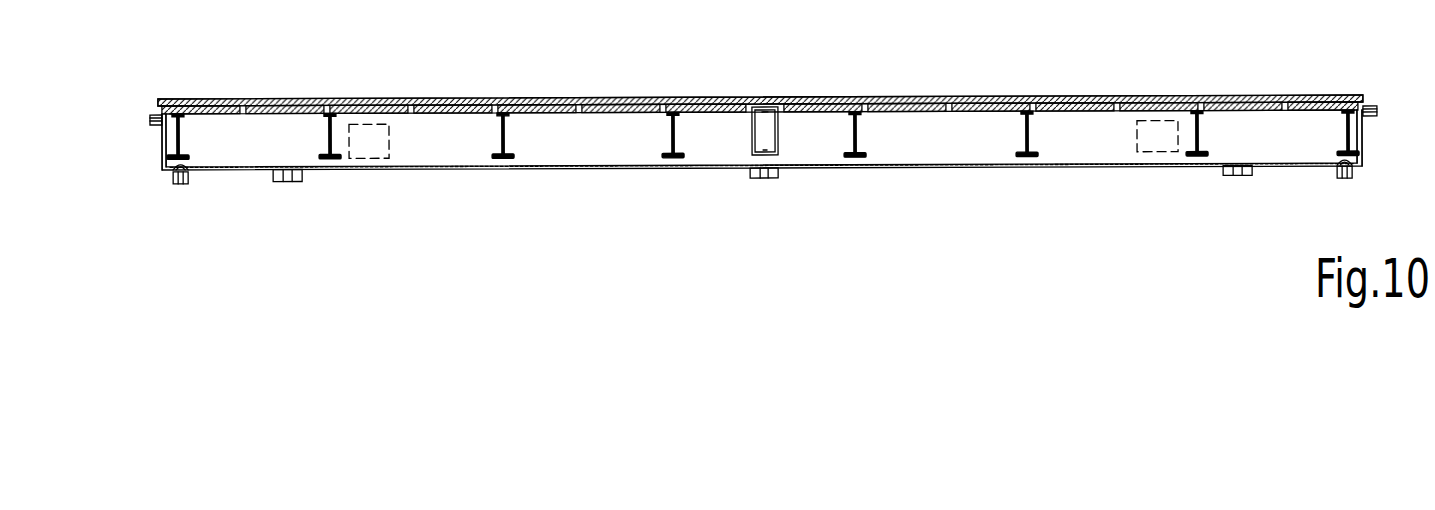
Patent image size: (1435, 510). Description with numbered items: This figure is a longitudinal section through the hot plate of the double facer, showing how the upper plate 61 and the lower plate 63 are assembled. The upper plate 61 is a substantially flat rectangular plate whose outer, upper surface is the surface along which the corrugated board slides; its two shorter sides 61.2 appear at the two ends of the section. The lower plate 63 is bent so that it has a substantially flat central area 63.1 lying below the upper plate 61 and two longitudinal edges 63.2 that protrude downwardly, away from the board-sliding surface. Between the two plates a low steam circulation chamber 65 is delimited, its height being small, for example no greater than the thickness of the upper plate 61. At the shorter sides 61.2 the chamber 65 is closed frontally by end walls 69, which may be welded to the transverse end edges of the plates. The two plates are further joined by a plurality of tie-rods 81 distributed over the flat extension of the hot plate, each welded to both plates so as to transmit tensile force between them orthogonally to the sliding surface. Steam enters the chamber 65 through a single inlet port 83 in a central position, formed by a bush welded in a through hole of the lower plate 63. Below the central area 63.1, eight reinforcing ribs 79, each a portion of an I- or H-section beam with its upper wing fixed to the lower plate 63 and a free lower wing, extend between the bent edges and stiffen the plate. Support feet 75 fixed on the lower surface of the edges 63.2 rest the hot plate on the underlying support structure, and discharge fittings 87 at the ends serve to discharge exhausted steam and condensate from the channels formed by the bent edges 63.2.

The upper plate 61 is at (1283, 97).
The shorter sides 61.2 is at (160, 99).
The lower plate 63 is at (1204, 173).
The central area 63.1 is at (1093, 113).
The longitudinal edges 63.2 is at (1292, 128).
The steam circulation chamber 65 is at (437, 100).
The end walls 69 is at (162, 152).
The support feet 75 is at (293, 181).
The reinforcing ribs 79 is at (333, 143).
The tie-rods 81 is at (545, 112).
The inlet port 83 is at (764, 118).
The discharge fitting 87 is at (190, 178).